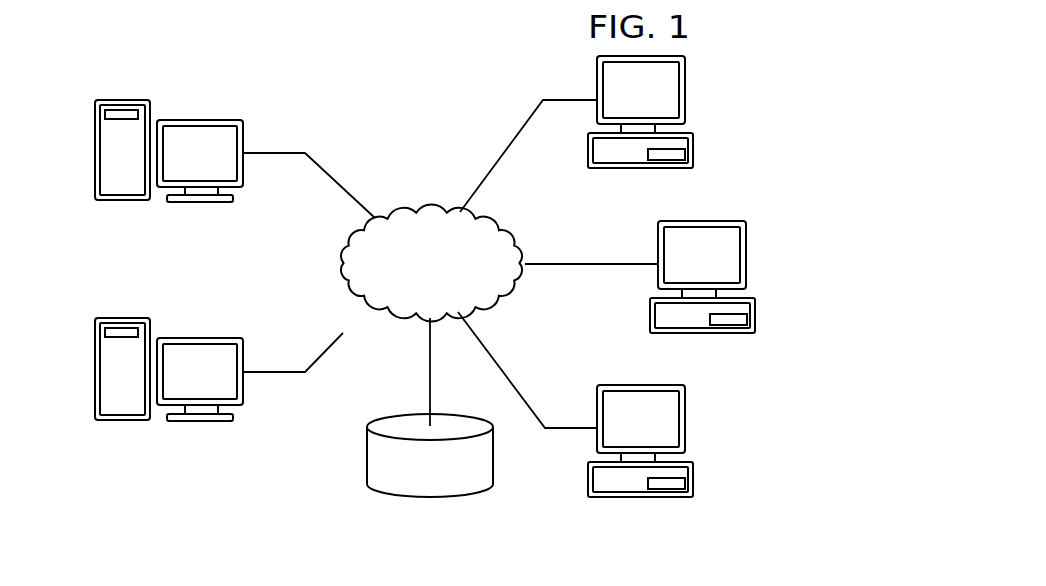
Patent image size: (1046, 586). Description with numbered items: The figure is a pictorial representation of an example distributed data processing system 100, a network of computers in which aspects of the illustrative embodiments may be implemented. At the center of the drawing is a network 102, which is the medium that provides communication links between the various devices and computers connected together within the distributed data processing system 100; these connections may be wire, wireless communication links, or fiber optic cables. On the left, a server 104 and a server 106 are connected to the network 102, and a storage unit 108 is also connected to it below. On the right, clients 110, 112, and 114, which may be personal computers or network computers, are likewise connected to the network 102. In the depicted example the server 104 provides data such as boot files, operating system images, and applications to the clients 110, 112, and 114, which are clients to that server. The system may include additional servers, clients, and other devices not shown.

The distributed data processing system 100 is at (309, 68).
The network 102 is at (422, 206).
The server 104 is at (95, 152).
The server 106 is at (95, 370).
The storage unit 108 is at (367, 460).
The client 110 is at (693, 150).
The client 112 is at (755, 315).
The client 114 is at (692, 480).